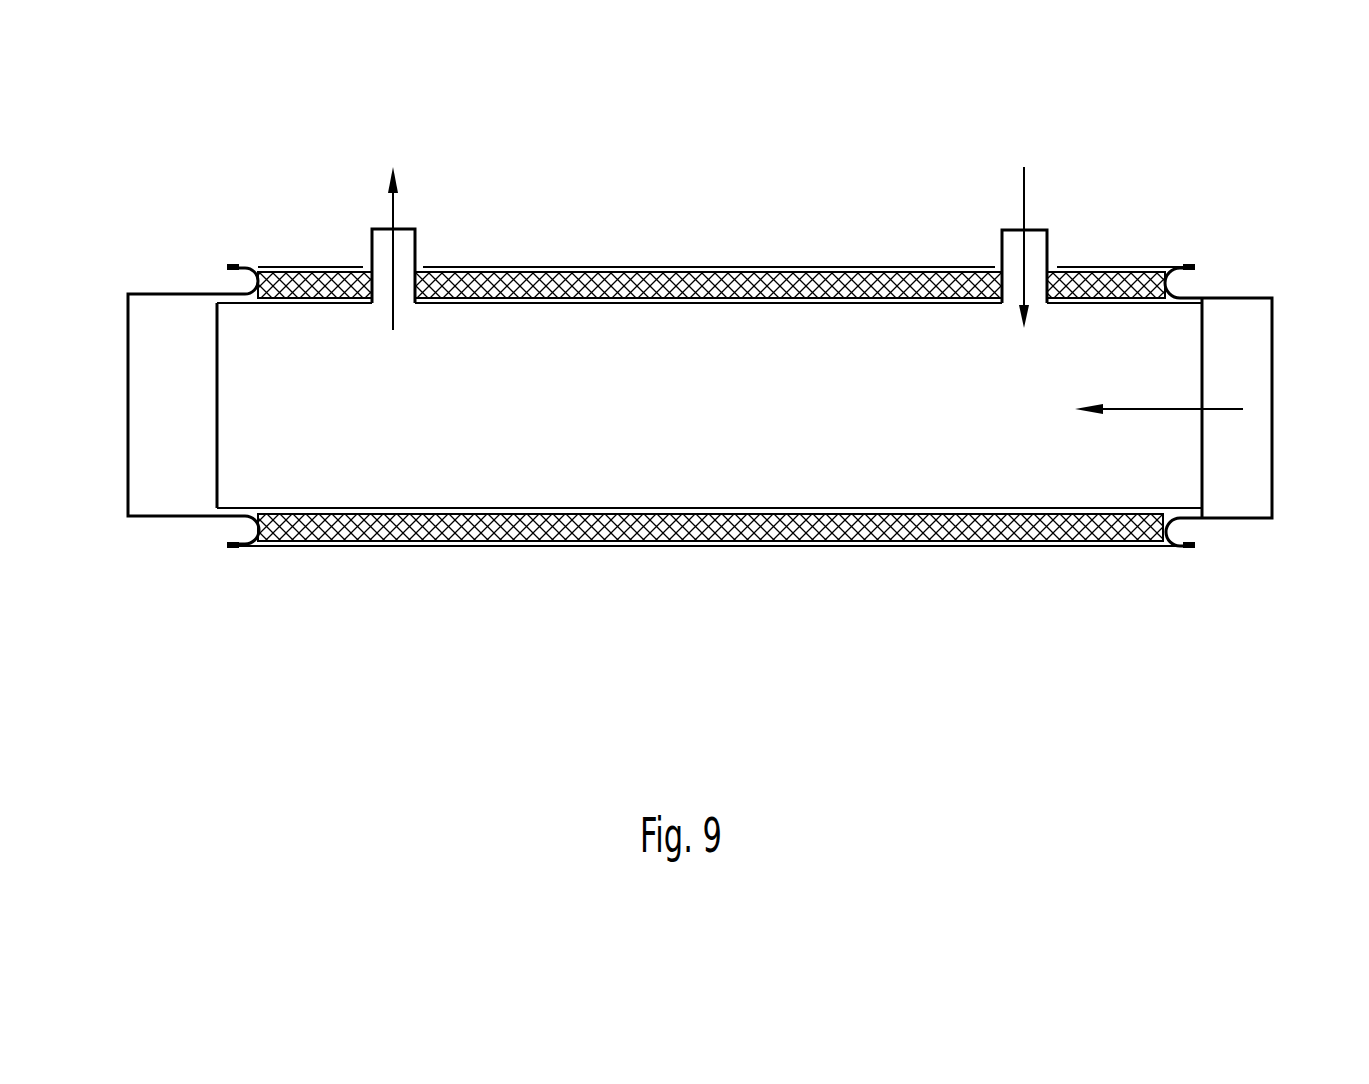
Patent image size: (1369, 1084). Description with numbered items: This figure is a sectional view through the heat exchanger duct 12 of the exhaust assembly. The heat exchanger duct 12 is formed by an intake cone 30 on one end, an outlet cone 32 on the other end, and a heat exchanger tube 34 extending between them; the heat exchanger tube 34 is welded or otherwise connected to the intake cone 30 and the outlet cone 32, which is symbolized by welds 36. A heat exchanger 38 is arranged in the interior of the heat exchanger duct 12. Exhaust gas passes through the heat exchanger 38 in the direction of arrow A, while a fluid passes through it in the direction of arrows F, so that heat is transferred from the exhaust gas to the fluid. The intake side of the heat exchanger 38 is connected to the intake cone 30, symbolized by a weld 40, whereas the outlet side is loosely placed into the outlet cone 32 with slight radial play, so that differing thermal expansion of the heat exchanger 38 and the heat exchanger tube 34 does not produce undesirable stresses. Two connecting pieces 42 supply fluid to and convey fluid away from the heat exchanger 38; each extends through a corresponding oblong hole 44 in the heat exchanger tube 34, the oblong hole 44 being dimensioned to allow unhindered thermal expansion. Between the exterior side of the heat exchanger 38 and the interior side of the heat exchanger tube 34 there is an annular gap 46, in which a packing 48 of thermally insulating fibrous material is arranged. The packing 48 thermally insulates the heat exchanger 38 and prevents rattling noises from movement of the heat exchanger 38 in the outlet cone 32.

The heat exchanger duct 12 is at (328, 565).
The intake cone 30 is at (1252, 467).
The outlet cone 32 is at (147, 453).
The heat exchanger tube 34 is at (828, 548).
The welds 36 is at (237, 268).
The heat exchanger 38 is at (690, 422).
The weld 40 is at (1202, 298).
The connecting pieces 42 is at (380, 238).
The oblong hole 44 is at (423, 257).
The annular gap 46 is at (683, 543).
The packing 48 is at (555, 530).